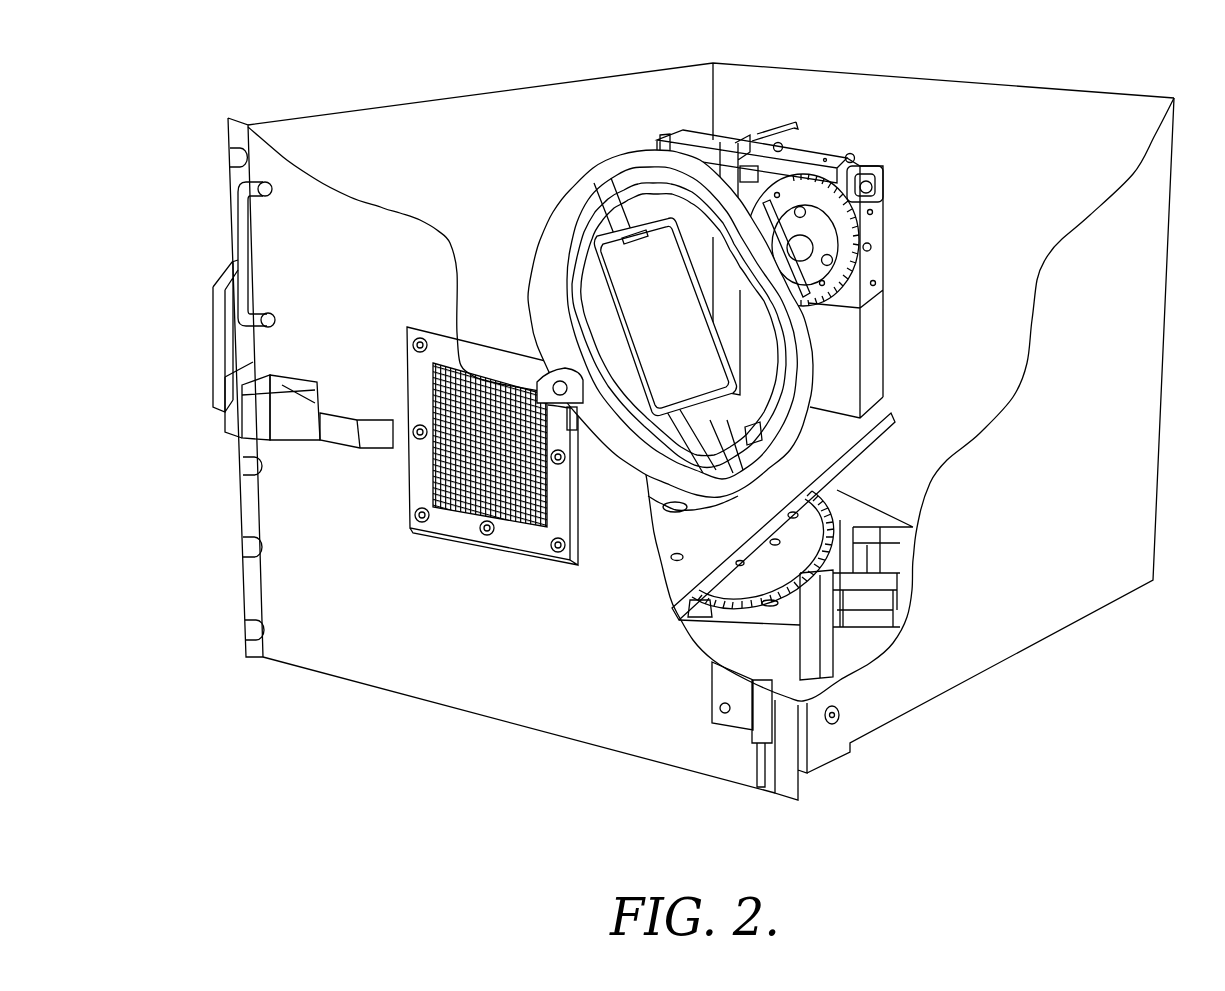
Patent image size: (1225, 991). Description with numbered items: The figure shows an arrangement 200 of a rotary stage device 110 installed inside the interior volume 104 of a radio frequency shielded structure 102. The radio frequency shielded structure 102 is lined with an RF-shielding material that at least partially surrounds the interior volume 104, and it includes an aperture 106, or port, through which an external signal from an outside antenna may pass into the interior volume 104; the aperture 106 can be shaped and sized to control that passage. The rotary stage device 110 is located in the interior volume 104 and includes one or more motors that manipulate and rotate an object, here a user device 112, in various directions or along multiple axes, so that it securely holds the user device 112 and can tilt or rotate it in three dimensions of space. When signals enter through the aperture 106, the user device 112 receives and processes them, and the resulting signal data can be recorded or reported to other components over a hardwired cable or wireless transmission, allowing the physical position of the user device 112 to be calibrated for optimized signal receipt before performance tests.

The test system 200 is at (76, 80).
The radio frequency shielded structure 102 is at (1168, 344).
The interior volume 104 is at (476, 122).
The aperture 106 is at (812, 147).
The rotary stage device 110 is at (545, 221).
The user device 112 is at (598, 286).